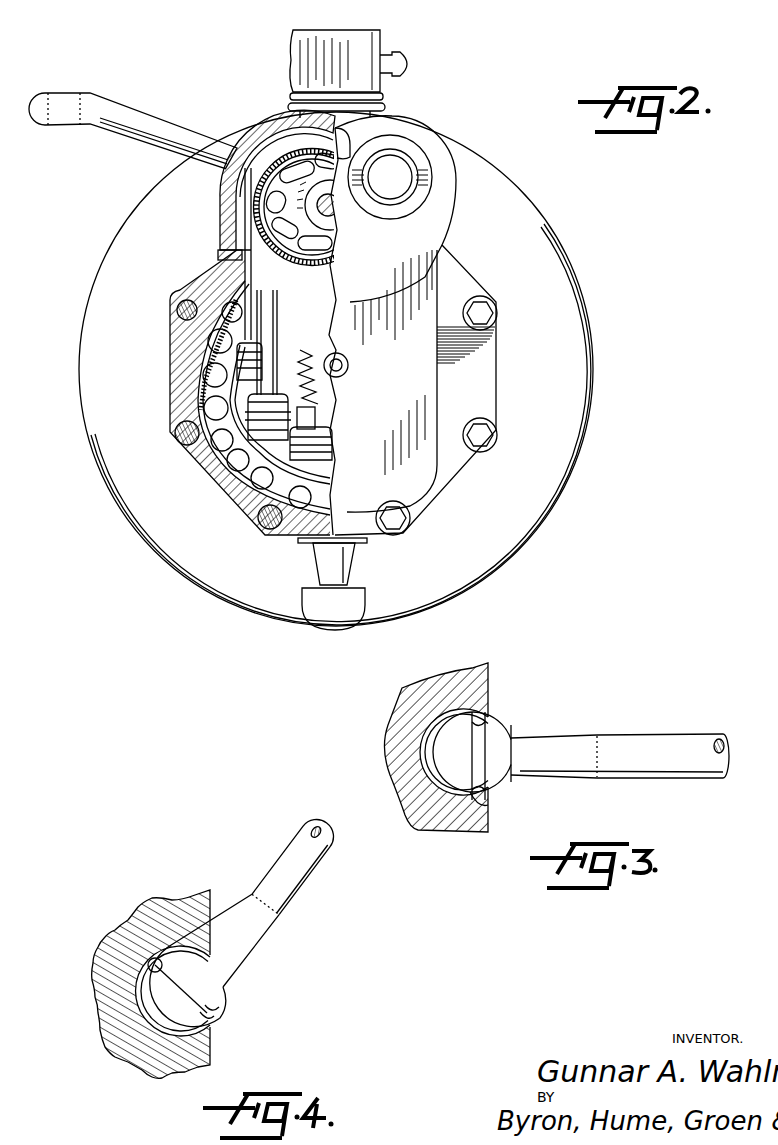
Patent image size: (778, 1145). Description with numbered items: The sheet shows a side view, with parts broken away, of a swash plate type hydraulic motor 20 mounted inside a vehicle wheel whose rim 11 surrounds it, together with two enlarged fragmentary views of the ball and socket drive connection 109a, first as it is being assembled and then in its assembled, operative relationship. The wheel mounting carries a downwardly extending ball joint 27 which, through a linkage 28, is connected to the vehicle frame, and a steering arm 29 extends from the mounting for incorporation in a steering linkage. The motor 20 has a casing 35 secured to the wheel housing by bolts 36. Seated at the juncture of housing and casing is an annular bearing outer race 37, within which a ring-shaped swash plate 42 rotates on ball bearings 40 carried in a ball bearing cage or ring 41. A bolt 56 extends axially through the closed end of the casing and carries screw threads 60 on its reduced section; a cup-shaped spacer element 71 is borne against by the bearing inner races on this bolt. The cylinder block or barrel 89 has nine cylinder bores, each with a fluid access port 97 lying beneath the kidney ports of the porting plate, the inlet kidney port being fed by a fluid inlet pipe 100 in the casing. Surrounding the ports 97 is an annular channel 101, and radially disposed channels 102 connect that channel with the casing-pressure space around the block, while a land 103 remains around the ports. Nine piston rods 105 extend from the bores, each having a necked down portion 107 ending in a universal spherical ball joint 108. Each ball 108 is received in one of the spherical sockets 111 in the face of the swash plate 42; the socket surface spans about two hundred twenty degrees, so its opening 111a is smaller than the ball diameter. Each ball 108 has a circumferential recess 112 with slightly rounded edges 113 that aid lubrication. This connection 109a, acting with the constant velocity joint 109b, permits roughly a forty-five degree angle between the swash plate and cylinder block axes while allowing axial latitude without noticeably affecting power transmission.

In FIG. 2, the rim 11 is at (557, 263).
In FIG. 2, the swash plate type hydraulic motor 20 is at (458, 220).
In FIG. 2, the downwardly extending ball joint 27 is at (330, 620).
In FIG. 2, the linkage 28 is at (368, 44).
In FIG. 2, the steering arm 29 is at (123, 133).
In FIG. 2, the casing 35 is at (457, 352).
In FIG. 2, the bolts 36 is at (487, 435).
In FIG. 2, the bearing outer race 37 is at (247, 443).
In FIG. 2, the ball bearings 40 is at (267, 477).
In FIG. 2, the ball bearing cage or ring 41 is at (205, 452).
In FIG. 2, the swash plate 42 is at (265, 450).
In FIG. 3, the swash plate 42 is at (392, 778).
In FIG. 4, the swash plate 42 is at (133, 917).
In FIG. 2, the bolt 56 is at (330, 212).
In FIG. 2, the screw threads 60 is at (337, 129).
In FIG. 2, the cup-shaped spacer element 71 is at (300, 208).
In FIG. 2, the cylinder block or barrel 89 is at (247, 285).
In FIG. 2, the fluid access port 97 is at (288, 168).
In FIG. 2, the fluid inlet pipe 100 is at (407, 177).
In FIG. 2, the annular channel 101 is at (333, 255).
In FIG. 2, the radially disposed channels 102 is at (302, 143).
In FIG. 2, the land 103 is at (280, 183).
In FIG. 2, the piston rods 105 is at (257, 366).
In FIG. 3, the piston rods 105 is at (688, 737).
In FIG. 4, the piston rods 105 is at (322, 862).
In FIG. 3, the necked down portion 107 is at (577, 737).
In FIG. 4, the necked down portion 107 is at (252, 943).
In FIG. 3, the universal spherical ball joint 108 is at (500, 732).
In FIG. 4, the universal spherical ball joint 108 is at (222, 993).
In FIG. 2, the ball and socket connection 109a is at (250, 380).
In FIG. 3, the ball and socket connection 109a is at (527, 788).
In FIG. 4, the ball and socket connection 109a is at (225, 898).
In FIG. 2, the constant velocity joint 109b is at (340, 354).
In FIG. 3, the spherical sockets 111 is at (418, 745).
In FIG. 3, the opening 111a is at (490, 707).
In FIG. 3, the recess 112 is at (476, 786).
In FIG. 4, the recess 112 is at (208, 1012).
In FIG. 3, the slightly rounded edges 113 is at (456, 676).
In FIG. 4, the slightly rounded edges 113 is at (212, 1008).